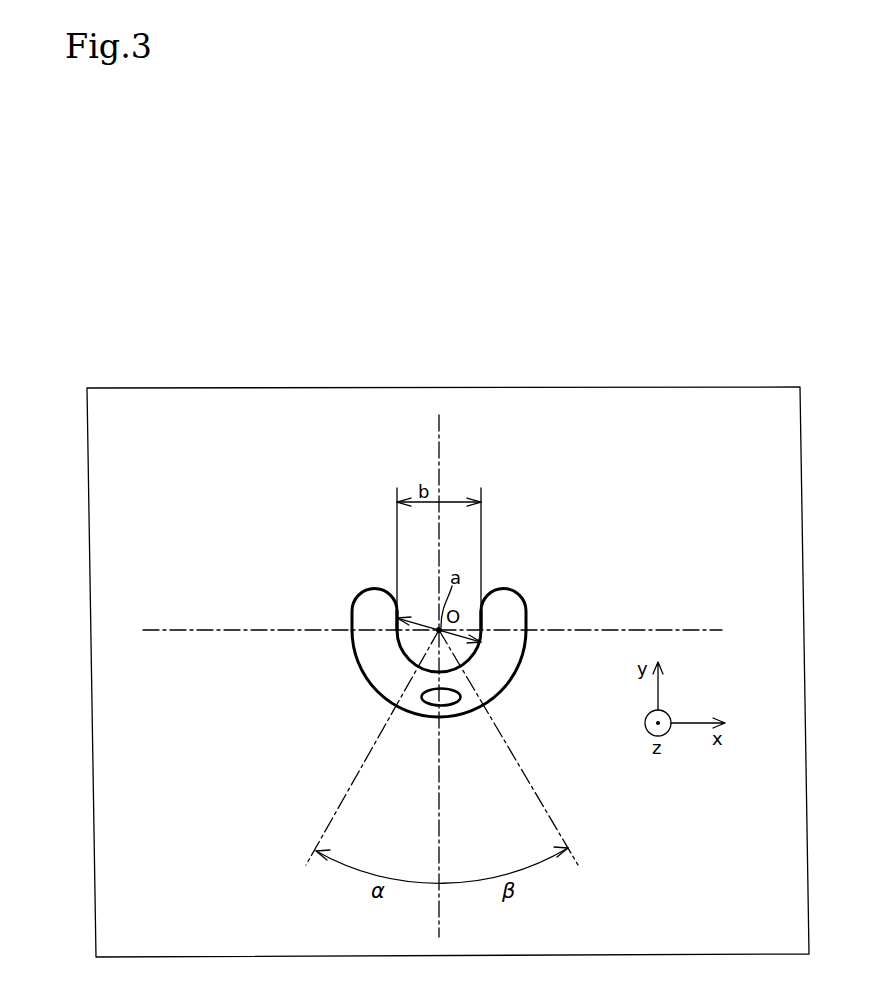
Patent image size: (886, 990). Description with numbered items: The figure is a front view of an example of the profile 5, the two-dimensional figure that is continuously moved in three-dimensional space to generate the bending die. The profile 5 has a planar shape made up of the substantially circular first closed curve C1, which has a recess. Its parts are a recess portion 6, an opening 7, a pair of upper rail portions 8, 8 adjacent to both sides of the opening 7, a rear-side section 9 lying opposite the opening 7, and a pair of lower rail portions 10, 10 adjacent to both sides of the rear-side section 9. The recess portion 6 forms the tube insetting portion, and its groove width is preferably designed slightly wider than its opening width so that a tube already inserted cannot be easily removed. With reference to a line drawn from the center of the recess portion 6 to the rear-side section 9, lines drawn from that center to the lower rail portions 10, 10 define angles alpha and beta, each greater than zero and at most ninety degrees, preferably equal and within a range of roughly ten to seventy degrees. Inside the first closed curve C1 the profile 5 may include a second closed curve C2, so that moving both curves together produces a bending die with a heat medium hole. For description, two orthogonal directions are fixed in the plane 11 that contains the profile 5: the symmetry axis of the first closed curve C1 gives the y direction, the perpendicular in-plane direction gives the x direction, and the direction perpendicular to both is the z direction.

The profile 5 is at (307, 647).
The recess portion 6 is at (415, 645).
The opening 7 is at (425, 597).
The upper rail portions 8 is at (357, 590).
The rear-side section 9 is at (441, 715).
The lower rail portions 10 is at (382, 700).
The plane 11 is at (118, 813).
The first closed curve C1 is at (527, 611).
The second closed curve C2 is at (447, 705).